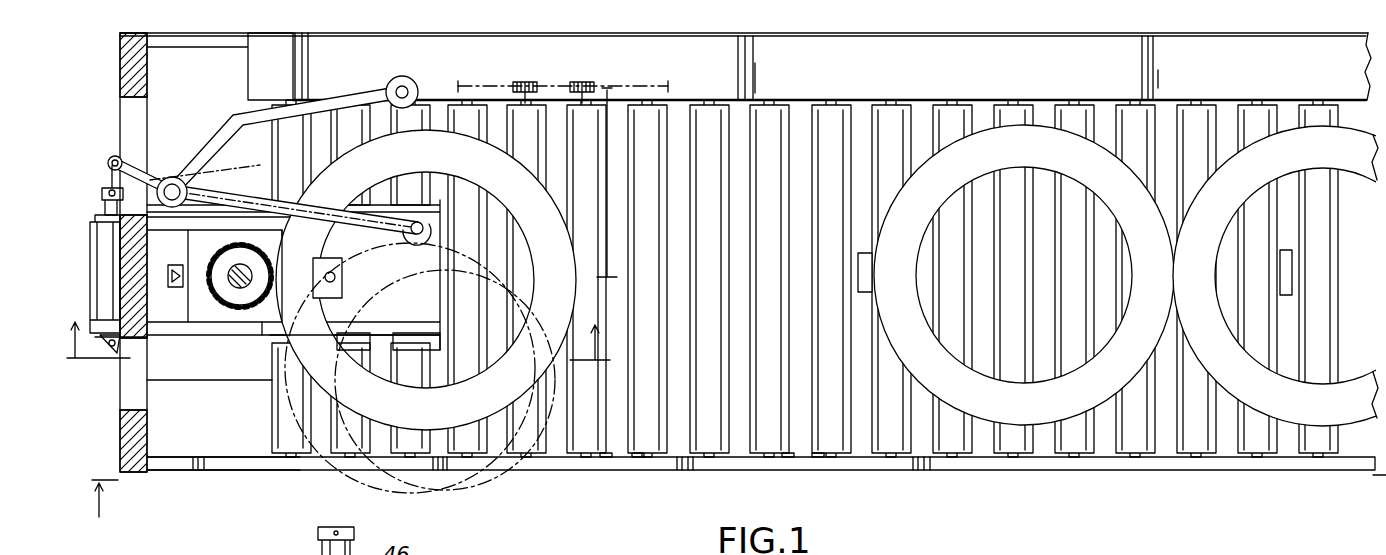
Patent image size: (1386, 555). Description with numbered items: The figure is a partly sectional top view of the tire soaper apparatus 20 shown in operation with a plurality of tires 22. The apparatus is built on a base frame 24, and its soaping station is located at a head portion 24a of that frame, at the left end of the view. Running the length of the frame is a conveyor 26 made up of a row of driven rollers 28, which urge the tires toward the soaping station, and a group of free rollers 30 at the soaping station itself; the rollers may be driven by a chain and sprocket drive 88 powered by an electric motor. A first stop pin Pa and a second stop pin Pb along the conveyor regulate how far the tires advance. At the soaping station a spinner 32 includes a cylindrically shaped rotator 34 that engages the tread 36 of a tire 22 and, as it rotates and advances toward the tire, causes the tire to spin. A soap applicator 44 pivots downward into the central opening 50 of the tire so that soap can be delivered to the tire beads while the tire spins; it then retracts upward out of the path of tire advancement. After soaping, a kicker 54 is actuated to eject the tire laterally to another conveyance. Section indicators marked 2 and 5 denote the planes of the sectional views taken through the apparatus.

The tire soaper apparatus 20 is at (107, 422).
The tire 22 is at (463, 430).
The base frame 24 is at (914, 477).
The head portion 24a is at (229, 488).
The conveyor 26 is at (688, 110).
The driven roller 28 is at (638, 458).
The free roller 30 is at (431, 104).
The spinner 32 is at (212, 356).
The rotator 34 is at (203, 318).
The tread 36 is at (262, 330).
The soap applicator 44 is at (335, 262).
The central opening 50 is at (300, 395).
The kicker 54 is at (356, 93).
The chain and sprocket drive 88 is at (515, 69).
The first stop pin Pa is at (1292, 275).
The second stop pin Pb is at (873, 275).
The section line 5- 5 is at (341, 224).
The section line 2- 2 is at (105, 517).